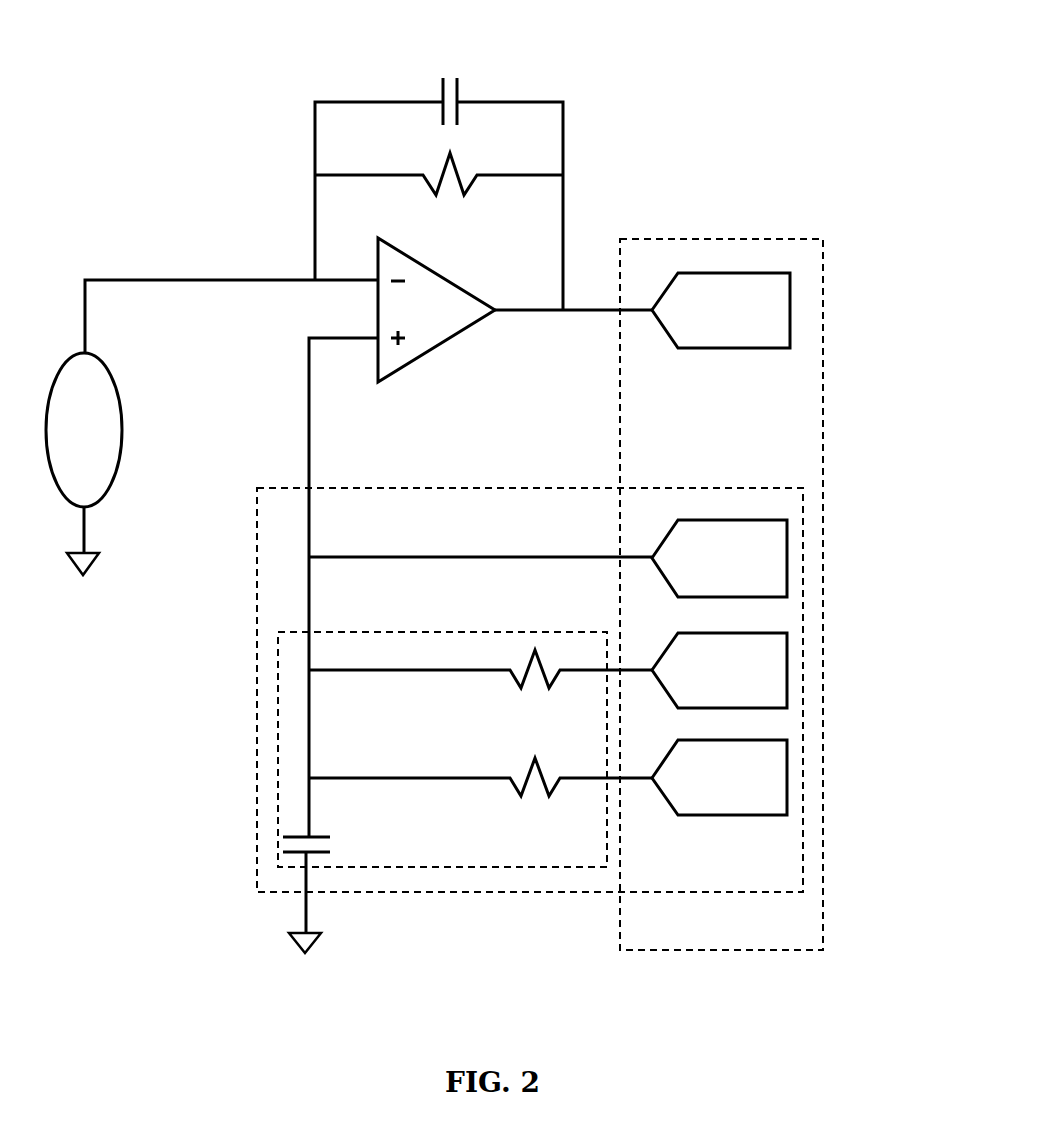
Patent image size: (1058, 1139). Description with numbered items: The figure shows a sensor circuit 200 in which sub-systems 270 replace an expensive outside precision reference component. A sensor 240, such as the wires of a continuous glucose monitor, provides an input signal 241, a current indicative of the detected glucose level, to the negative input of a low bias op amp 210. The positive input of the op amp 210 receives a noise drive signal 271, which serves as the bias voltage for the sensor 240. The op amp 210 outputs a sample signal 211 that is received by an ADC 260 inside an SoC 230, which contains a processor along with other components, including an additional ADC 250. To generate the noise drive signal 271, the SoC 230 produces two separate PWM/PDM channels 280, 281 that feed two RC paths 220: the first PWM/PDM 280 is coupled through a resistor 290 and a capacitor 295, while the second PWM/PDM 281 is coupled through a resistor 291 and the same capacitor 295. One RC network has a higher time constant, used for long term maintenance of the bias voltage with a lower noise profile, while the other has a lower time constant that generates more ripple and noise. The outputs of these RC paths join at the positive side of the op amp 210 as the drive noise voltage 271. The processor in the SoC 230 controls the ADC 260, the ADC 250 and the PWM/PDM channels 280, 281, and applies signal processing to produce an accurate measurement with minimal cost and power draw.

The sensor circuit 200 is at (782, 58).
The op amp 210 is at (418, 363).
The sample signal 211 is at (578, 307).
The RC paths 220 is at (453, 628).
The SoC 230 is at (720, 955).
The sensor 240 is at (115, 473).
The input signal 241 is at (178, 278).
The ADC 250 is at (787, 522).
The ADC 260 is at (790, 273).
The sub-systems 270 is at (455, 895).
The noise drive signal 271 is at (308, 428).
The PWM/PDM 280 is at (787, 633).
The PWM/PDM 281 is at (787, 740).
The resistor 290 is at (508, 690).
The resistor 291 is at (510, 798).
The capacitor 295 is at (322, 833).